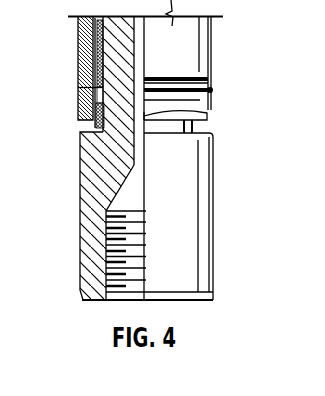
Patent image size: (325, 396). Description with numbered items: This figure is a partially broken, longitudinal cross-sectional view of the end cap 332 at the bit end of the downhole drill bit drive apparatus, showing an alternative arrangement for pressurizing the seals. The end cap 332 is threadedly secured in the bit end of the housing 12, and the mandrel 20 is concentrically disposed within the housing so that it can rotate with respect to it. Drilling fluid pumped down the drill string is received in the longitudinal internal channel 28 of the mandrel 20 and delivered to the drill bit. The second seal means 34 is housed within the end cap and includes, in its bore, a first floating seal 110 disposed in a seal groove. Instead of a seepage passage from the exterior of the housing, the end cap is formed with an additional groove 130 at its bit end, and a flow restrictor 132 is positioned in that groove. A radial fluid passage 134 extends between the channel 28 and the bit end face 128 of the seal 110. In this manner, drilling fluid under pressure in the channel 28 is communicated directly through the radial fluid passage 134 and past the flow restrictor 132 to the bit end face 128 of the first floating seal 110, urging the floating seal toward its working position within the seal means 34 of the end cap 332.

The tubular housing 12 is at (74, 38).
The mandrel 20 is at (134, 62).
The longitudinal internal channel 28 is at (207, 113).
The second seal means 34 is at (73, 100).
The first floating seal 110 is at (84, 64).
The bit end face 128 is at (95, 85).
The additional groove 130 is at (107, 134).
The flow restrictor 132 is at (105, 153).
The radial fluid passage 134 is at (79, 88).
The end cap 332 is at (92, 122).